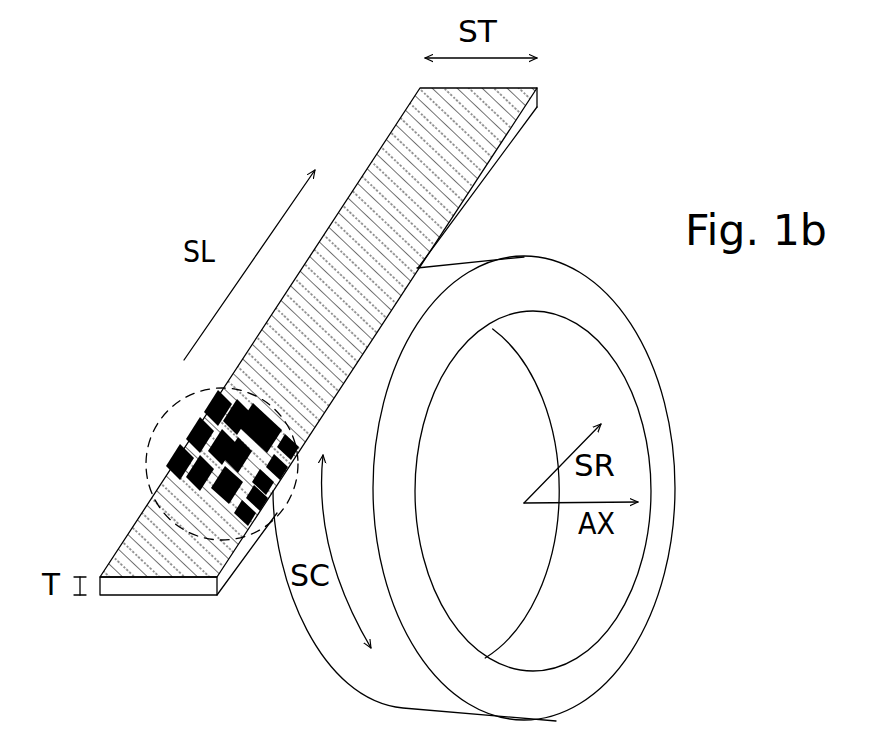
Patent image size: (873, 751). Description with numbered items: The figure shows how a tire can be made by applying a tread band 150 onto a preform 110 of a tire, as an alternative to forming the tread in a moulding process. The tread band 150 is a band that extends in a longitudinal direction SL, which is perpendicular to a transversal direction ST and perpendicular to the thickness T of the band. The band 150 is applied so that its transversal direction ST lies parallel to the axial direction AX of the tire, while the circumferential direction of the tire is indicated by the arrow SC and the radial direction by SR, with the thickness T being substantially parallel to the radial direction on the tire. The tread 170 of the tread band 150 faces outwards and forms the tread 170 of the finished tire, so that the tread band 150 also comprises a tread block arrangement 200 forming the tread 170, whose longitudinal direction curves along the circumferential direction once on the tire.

The preform of a tire 110 is at (646, 383).
The tread band 150 is at (514, 127).
The tread 170 is at (427, 140).
The tread block arrangement 200 is at (153, 435).